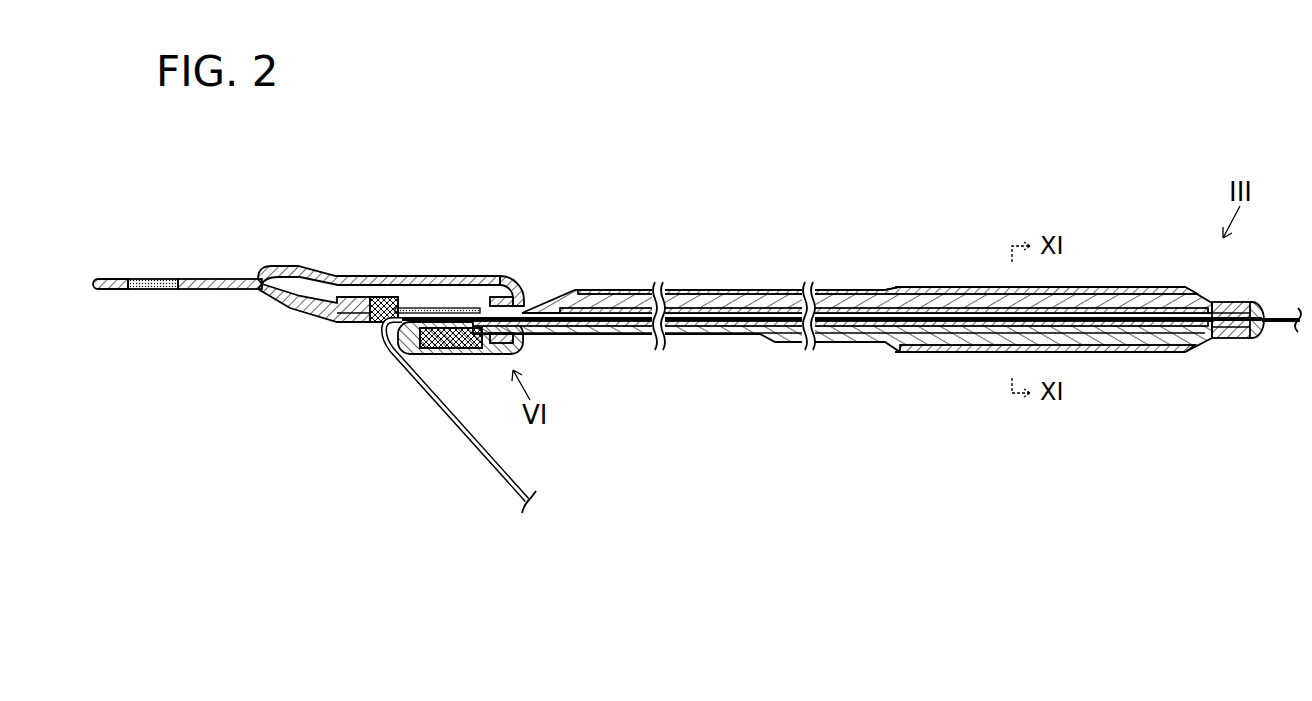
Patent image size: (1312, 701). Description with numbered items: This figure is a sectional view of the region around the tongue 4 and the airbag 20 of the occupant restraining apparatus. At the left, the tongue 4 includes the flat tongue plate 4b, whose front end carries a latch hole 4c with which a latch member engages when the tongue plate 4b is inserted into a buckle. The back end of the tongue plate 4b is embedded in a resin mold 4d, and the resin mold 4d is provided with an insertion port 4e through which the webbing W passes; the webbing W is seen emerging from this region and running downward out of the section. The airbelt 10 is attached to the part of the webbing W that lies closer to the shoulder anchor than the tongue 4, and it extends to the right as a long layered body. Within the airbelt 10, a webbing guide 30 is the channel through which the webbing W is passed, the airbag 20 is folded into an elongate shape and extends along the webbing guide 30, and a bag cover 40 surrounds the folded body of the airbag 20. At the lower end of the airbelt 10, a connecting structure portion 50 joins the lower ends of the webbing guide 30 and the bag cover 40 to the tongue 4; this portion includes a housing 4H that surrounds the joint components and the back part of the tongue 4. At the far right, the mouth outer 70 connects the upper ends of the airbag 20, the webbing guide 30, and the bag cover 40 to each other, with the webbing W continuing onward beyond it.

The tongue 4 is at (296, 302).
The tongue plate 4b is at (115, 278).
The latch hole 4c is at (152, 291).
The resin mold 4d is at (452, 352).
The insertion port 4e is at (381, 325).
The housing 4H is at (386, 275).
The airbelt 10 is at (834, 268).
The airbag 20 is at (951, 290).
The webbing guide 30 is at (936, 348).
The bag cover 40 is at (1112, 288).
The connecting structure portion 50 is at (512, 259).
The mouth outer 70 is at (1242, 340).
The webbing W is at (478, 470).